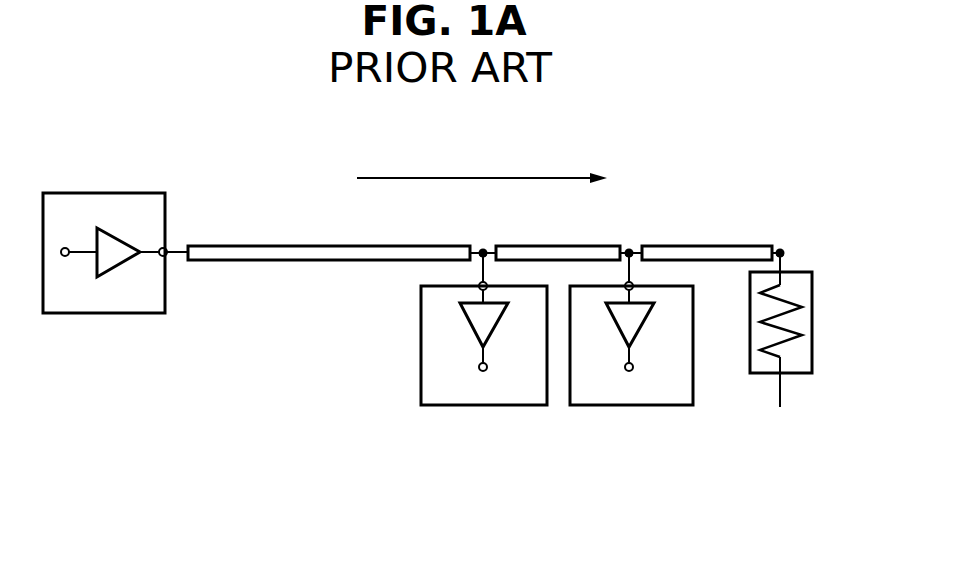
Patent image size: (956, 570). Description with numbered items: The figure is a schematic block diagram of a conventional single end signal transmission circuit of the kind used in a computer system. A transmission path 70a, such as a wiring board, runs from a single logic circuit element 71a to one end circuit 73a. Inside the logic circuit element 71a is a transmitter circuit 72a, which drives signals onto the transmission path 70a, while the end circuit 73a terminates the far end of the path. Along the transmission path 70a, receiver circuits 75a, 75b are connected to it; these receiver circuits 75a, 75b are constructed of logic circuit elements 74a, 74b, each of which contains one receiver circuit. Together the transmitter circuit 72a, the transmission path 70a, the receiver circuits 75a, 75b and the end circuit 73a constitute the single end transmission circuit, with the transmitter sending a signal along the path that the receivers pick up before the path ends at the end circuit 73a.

The transmission path 70a is at (397, 246).
The logic circuit element 71a is at (138, 193).
The transmitter circuit 72a is at (114, 237).
The end circuit 73a is at (807, 272).
The logic circuit element 74a is at (497, 405).
The logic circuit element 74b is at (643, 405).
The receiver circuit 75a is at (475, 319).
The receiver circuit 75b is at (621, 319).